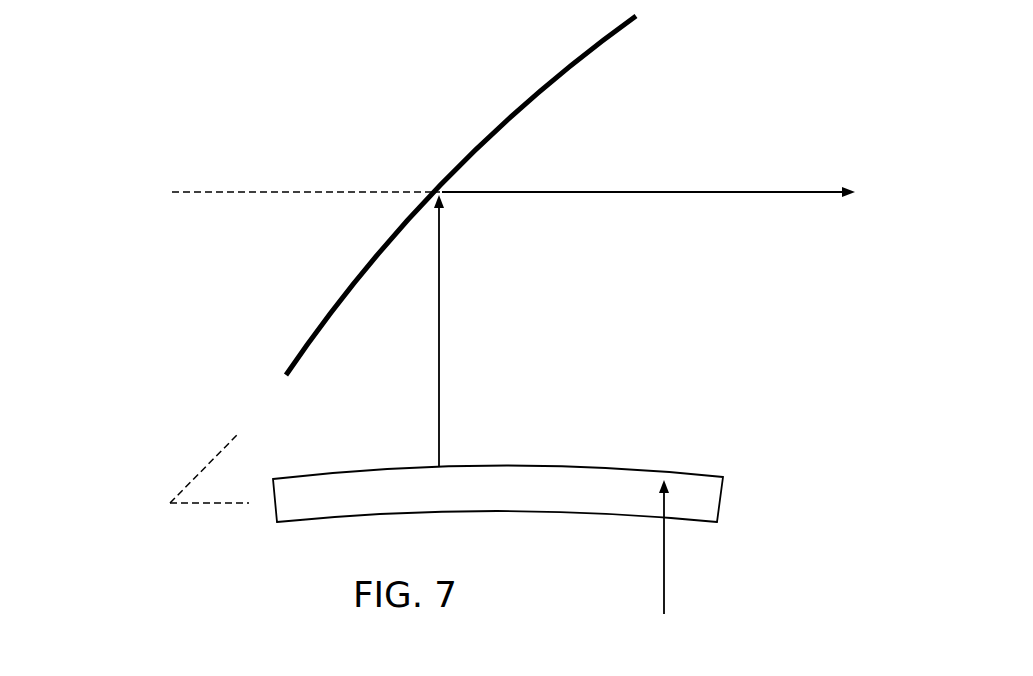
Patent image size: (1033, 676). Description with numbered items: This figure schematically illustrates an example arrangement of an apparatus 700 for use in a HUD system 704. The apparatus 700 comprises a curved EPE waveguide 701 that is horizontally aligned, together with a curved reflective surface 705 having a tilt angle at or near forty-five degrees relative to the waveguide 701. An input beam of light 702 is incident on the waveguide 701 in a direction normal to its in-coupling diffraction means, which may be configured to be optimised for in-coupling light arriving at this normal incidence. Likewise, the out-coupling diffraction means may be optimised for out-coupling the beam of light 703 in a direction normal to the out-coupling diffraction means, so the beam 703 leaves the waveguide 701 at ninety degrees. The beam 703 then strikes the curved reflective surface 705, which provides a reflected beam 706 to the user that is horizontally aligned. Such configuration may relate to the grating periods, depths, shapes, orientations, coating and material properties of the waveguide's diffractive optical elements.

The apparatus 700 is at (554, 445).
The curved EPE waveguide 701 is at (718, 453).
The input beam of light 702 is at (670, 566).
The beam of light 703 is at (440, 377).
The HUD system 704 is at (227, 92).
The curved reflective surface 705 is at (604, 42).
The reflected beam 706 is at (748, 193).